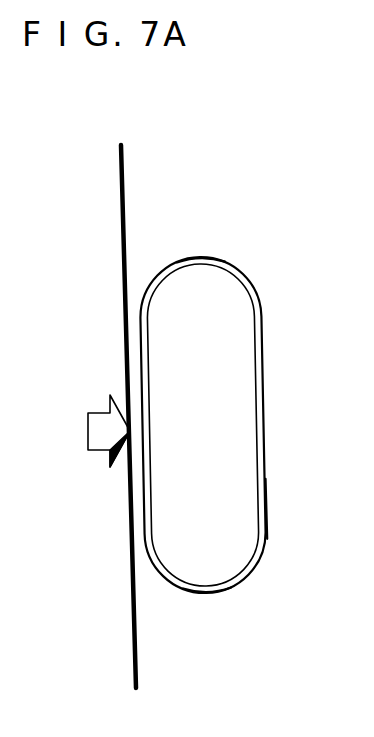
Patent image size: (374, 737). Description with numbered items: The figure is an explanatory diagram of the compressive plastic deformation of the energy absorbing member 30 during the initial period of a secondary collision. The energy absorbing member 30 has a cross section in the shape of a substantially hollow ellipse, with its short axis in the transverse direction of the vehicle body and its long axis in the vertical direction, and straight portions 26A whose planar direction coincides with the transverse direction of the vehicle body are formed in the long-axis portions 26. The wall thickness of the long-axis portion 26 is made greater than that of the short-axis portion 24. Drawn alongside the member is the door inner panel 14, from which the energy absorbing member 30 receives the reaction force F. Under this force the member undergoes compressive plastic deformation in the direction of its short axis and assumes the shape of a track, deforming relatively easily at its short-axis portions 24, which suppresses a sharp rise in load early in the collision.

The door inner panel 14 is at (120, 228).
The short-axis portion 24 is at (153, 423).
The long-axis portion 26 is at (252, 280).
The straight portion 26A is at (200, 258).
The energy absorbing member 30 is at (270, 518).
The reaction force F is at (100, 452).